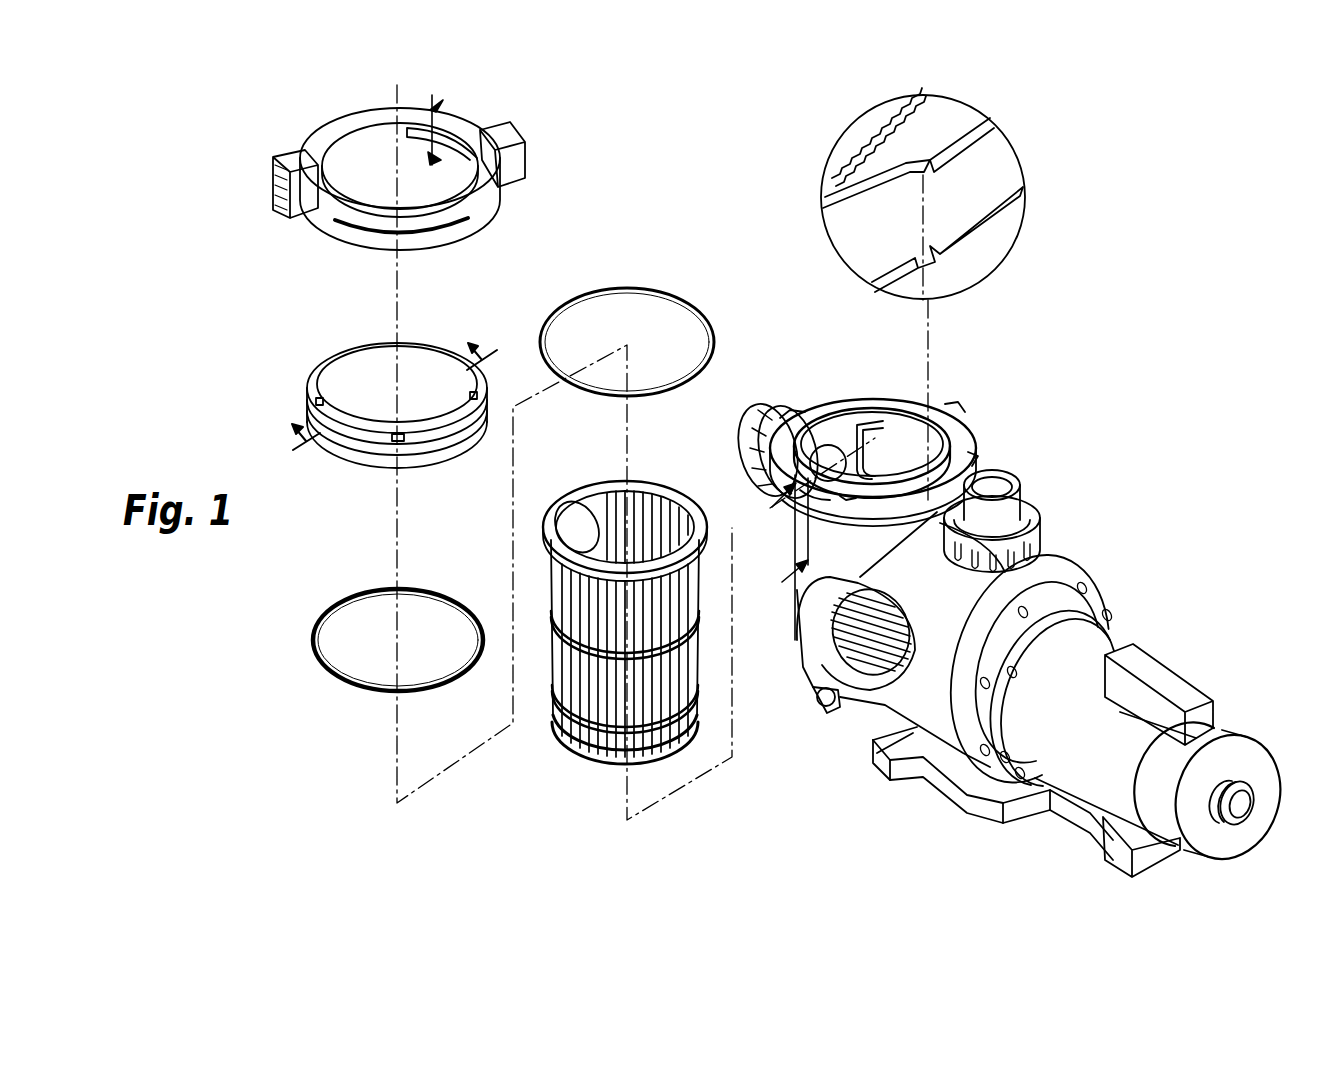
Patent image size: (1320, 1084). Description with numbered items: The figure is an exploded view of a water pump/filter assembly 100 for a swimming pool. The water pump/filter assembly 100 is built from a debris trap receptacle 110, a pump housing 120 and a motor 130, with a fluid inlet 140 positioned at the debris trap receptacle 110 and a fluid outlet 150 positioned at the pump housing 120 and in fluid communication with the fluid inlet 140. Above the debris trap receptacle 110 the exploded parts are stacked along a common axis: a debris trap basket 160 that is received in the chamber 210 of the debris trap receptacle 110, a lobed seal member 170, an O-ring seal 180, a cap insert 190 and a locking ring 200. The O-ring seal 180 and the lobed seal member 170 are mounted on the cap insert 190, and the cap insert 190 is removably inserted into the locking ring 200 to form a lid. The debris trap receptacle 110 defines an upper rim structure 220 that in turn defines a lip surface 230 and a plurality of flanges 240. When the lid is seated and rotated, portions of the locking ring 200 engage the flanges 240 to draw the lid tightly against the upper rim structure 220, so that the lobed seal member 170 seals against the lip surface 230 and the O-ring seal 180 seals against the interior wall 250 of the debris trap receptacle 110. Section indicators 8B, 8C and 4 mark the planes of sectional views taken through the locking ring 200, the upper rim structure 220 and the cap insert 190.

The water pump/filter assembly 100 is at (986, 595).
The debris trap receptacle 110 is at (894, 586).
The pump housing 120 is at (1050, 540).
The motor 130 is at (1158, 660).
The fluid inlet 140 is at (766, 408).
The fluid outlet 150 is at (1024, 500).
The debris trap basket 160 is at (598, 760).
The lobed seal member 170 is at (590, 293).
The O-ring seal 180 is at (338, 681).
The cap insert 190 is at (336, 446).
The locking ring 200 is at (333, 200).
The chamber 210 is at (873, 470).
The upper rim structure 220 is at (798, 467).
The lip surface 230 is at (822, 420).
The flanges 240 is at (912, 389).
The interior wall 250 is at (945, 445).
The section line 8B is at (456, 145).
The section line 8C is at (771, 557).
The section line 4 is at (387, 385).